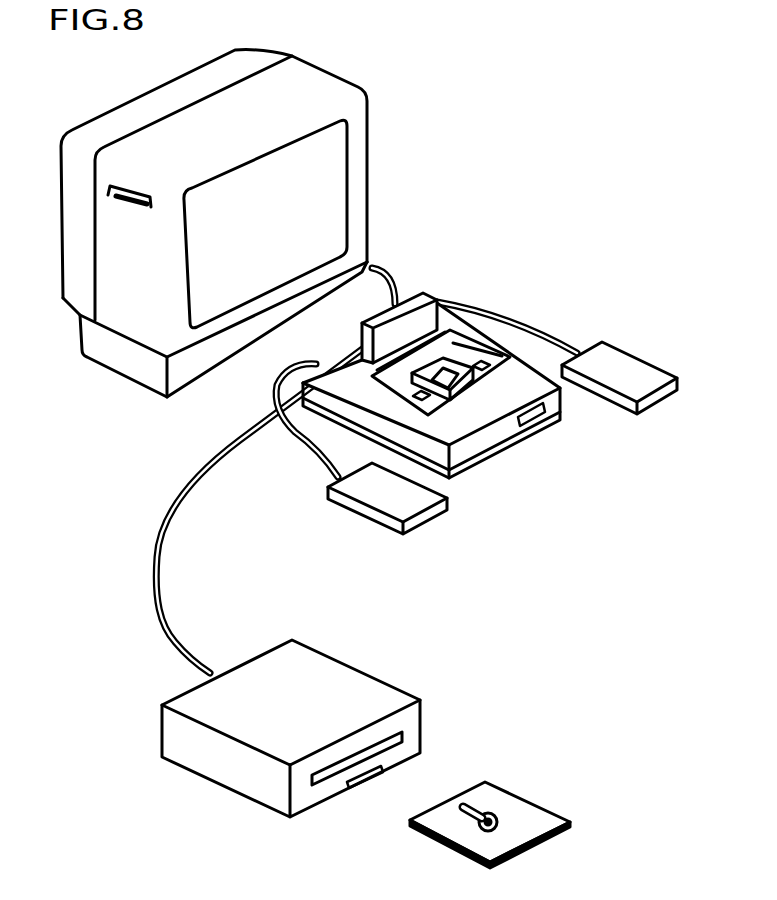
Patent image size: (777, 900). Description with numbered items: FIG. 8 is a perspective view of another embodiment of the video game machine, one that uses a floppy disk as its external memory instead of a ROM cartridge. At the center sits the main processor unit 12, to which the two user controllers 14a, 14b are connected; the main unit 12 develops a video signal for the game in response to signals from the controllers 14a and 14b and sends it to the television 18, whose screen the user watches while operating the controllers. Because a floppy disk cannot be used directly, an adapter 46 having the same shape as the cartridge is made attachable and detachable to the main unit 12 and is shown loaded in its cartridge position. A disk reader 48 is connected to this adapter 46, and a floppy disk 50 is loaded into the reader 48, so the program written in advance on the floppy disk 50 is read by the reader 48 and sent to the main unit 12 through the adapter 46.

The television 18 is at (362, 154).
The adapter 46 is at (413, 297).
The main processor unit 12 is at (487, 440).
The user controller 14a is at (420, 518).
The user controller 14b is at (650, 400).
The disk reader 48 is at (343, 665).
The floppy disk 50 is at (510, 802).